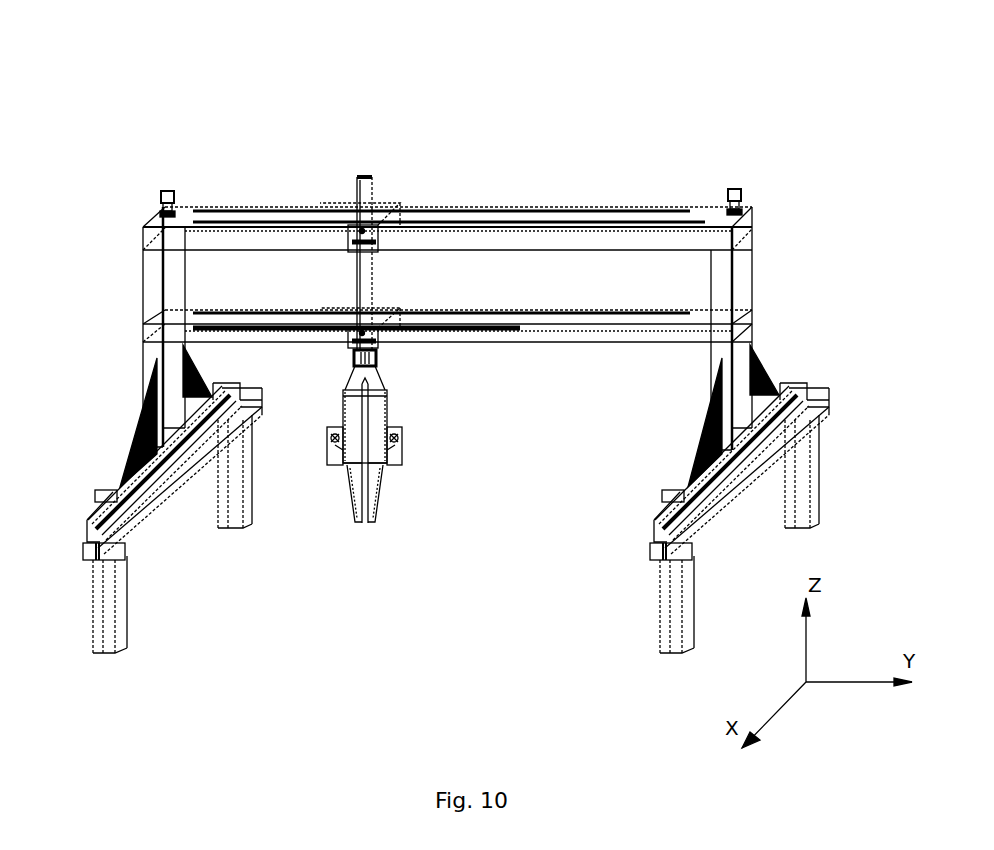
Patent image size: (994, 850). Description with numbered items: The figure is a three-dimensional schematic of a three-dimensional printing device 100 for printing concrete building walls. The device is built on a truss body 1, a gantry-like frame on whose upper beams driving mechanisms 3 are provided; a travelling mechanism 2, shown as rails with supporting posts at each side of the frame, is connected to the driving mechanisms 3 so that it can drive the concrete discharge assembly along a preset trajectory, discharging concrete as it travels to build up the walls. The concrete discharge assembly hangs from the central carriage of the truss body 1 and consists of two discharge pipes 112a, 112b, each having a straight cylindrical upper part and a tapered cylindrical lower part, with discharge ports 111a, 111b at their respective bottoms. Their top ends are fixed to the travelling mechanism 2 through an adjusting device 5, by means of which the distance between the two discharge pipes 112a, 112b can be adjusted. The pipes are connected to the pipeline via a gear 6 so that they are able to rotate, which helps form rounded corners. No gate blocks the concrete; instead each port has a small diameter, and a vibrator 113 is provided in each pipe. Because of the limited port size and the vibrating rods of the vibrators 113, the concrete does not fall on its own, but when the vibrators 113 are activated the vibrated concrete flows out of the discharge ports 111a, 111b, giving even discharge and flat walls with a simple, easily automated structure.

The 3D printing device 100 is at (450, 33).
The truss body 1 is at (310, 207).
The travelling mechanism 2 is at (123, 473).
The driving mechanism 3 is at (740, 190).
The adjusting device 5 is at (360, 392).
The gear 6 is at (375, 370).
The discharge port 111a is at (357, 510).
The discharge port 111b is at (370, 517).
The discharge pipe 112a is at (350, 467).
The discharge pipe 112b is at (388, 442).
The vibrator 113 is at (377, 433).